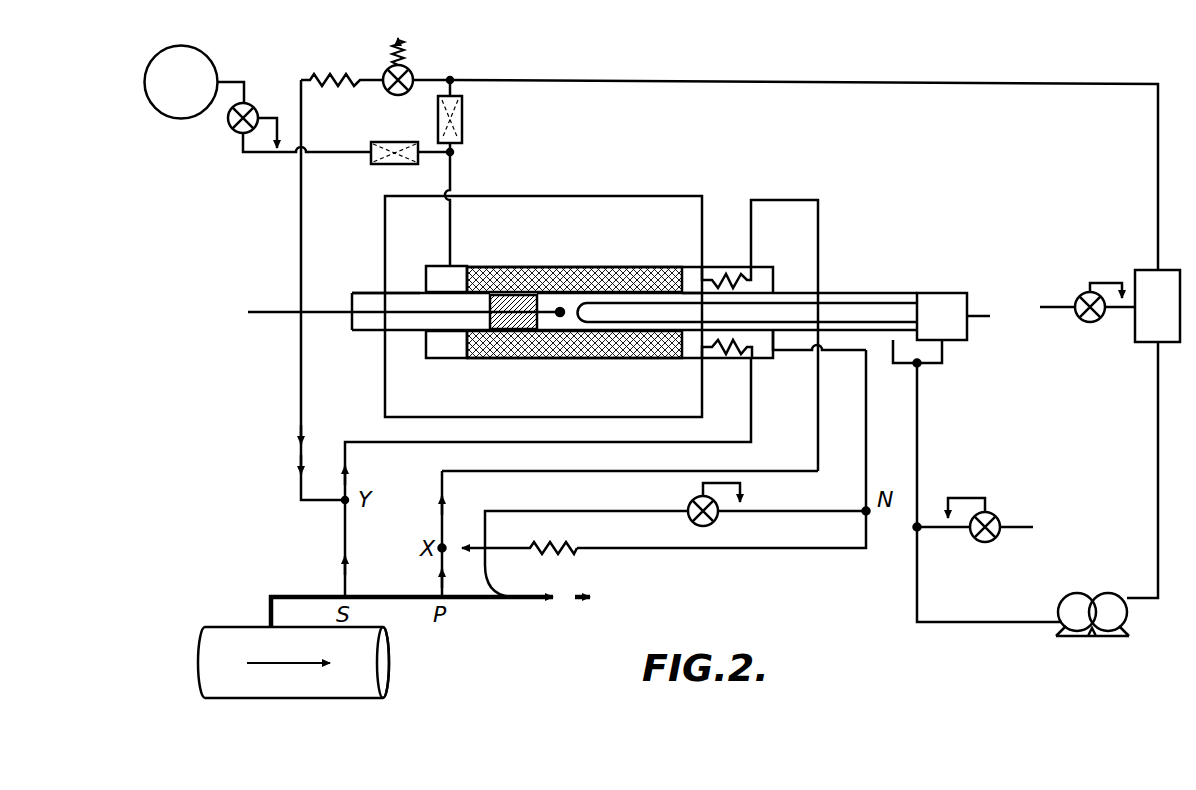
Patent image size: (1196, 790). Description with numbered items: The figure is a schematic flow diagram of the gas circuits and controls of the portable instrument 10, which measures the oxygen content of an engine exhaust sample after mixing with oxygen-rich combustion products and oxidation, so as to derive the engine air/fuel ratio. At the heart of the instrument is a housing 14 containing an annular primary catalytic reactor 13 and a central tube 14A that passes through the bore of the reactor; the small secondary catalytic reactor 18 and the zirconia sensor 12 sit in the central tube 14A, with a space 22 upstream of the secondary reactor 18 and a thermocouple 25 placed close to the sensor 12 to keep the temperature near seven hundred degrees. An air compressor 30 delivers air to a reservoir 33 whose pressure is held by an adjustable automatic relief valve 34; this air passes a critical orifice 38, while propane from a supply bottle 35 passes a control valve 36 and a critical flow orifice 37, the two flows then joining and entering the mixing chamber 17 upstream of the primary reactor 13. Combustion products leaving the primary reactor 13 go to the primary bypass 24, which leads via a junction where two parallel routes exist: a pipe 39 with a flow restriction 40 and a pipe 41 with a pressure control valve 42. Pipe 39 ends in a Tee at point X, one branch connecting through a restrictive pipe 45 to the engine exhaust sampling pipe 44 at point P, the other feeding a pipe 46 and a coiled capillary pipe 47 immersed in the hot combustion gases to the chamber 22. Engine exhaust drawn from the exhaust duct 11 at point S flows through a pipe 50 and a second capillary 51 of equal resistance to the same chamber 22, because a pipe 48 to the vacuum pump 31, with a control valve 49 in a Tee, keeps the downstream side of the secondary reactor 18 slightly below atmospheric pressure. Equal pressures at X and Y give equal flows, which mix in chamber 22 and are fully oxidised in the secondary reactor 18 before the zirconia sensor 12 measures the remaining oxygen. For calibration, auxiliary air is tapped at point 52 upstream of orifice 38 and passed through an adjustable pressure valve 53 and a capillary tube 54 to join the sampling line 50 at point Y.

The portable instrument 10 is at (832, 72).
The engine exhaust duct 11 is at (385, 649).
The zirconia sensor 12 is at (613, 303).
The primary catalytic reactor 13 is at (550, 267).
The housing 14 is at (540, 358).
The central tube 14A is at (357, 291).
The mixing chamber 17 is at (431, 266).
The secondary catalytic reactor 18 is at (510, 294).
The space 22 is at (372, 322).
The primary bypass 24 is at (795, 352).
The thermocouple 25 is at (272, 314).
The air compressor 30 is at (1112, 597).
The vacuum pump 31 is at (1068, 598).
The reservoir 33 is at (1172, 318).
The adjustable automatic relief valve 34 is at (1080, 317).
The supply bottle 35 is at (195, 95).
The control valve 36 is at (232, 128).
The critical flow orifice 37 is at (372, 160).
The critical orifice 38 is at (463, 116).
The pipe 39 is at (690, 550).
The flow restriction 40 is at (567, 547).
The pipe 41 is at (572, 511).
The pressure control valve 42 is at (716, 519).
The engine exhaust sampling pipe 44 is at (487, 608).
The restrictive pipe 45 is at (440, 566).
The pipe 46 is at (817, 414).
The coiled capillary pipe 47 is at (724, 270).
The pipe 48 is at (919, 428).
The control valve 49 is at (972, 540).
The pipe 50 is at (408, 444).
The capillary 51 is at (731, 360).
The tapping point 52 is at (455, 79).
The adjustable pressure valve 53 is at (410, 69).
The capillary tube 54 is at (345, 88).